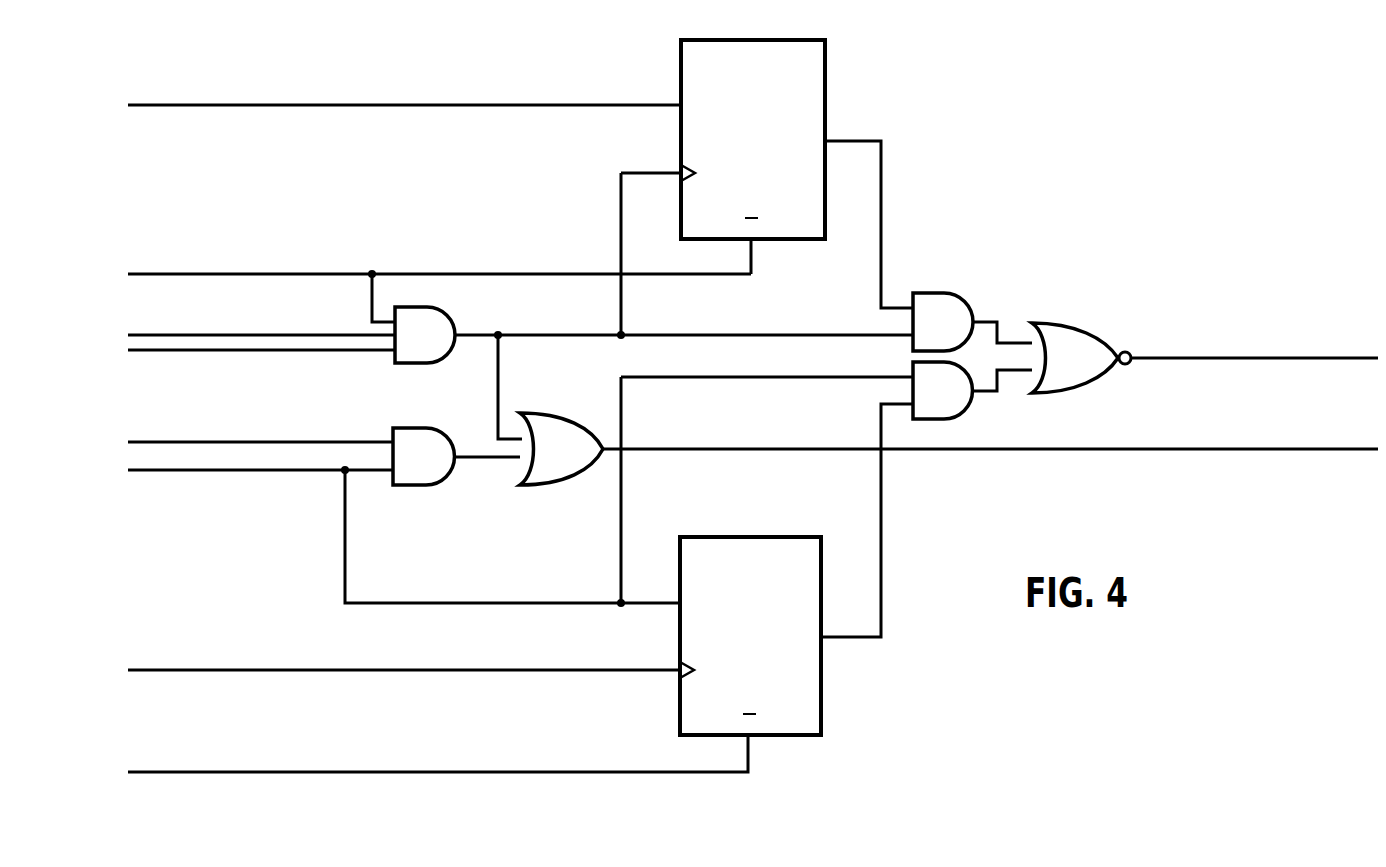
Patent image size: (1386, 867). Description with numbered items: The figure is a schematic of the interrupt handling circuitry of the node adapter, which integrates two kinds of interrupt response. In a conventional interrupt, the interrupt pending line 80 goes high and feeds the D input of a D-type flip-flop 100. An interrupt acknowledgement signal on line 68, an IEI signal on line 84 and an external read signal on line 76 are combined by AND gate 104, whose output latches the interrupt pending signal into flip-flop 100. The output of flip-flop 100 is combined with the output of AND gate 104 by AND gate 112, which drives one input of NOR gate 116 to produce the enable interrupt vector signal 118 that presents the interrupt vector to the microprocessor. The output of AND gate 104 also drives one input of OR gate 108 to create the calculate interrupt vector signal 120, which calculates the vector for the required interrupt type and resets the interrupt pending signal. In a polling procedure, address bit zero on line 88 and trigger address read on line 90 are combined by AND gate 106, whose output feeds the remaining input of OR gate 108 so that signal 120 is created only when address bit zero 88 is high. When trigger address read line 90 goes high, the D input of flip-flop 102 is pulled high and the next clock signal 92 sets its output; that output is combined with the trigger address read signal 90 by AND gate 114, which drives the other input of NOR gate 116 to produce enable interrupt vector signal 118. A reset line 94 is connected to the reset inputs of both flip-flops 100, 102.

The interrupt pending line 80 is at (478, 105).
The interrupt acknowledgement signal line 68 is at (498, 274).
The IEI signal line 84 is at (300, 333).
The external read signal line 76 is at (302, 352).
The address bit zero line 88 is at (373, 438).
The trigger address read line 90 is at (355, 477).
The clock signal 92 is at (438, 669).
The reset signal line 94 is at (455, 771).
The D-type flip-flop 100 is at (783, 46).
The D type flip-flop 102 is at (758, 548).
The AND gate 104 is at (412, 364).
The AND gate 106 is at (410, 486).
The OR gate 108 is at (550, 480).
The AND gate 112 is at (938, 304).
The AND gate 114 is at (935, 398).
The NOR gate 116 is at (1064, 326).
The enable interrupt vector signal 118 is at (1200, 358).
The calculate interrupt vector signal 120 is at (1195, 450).